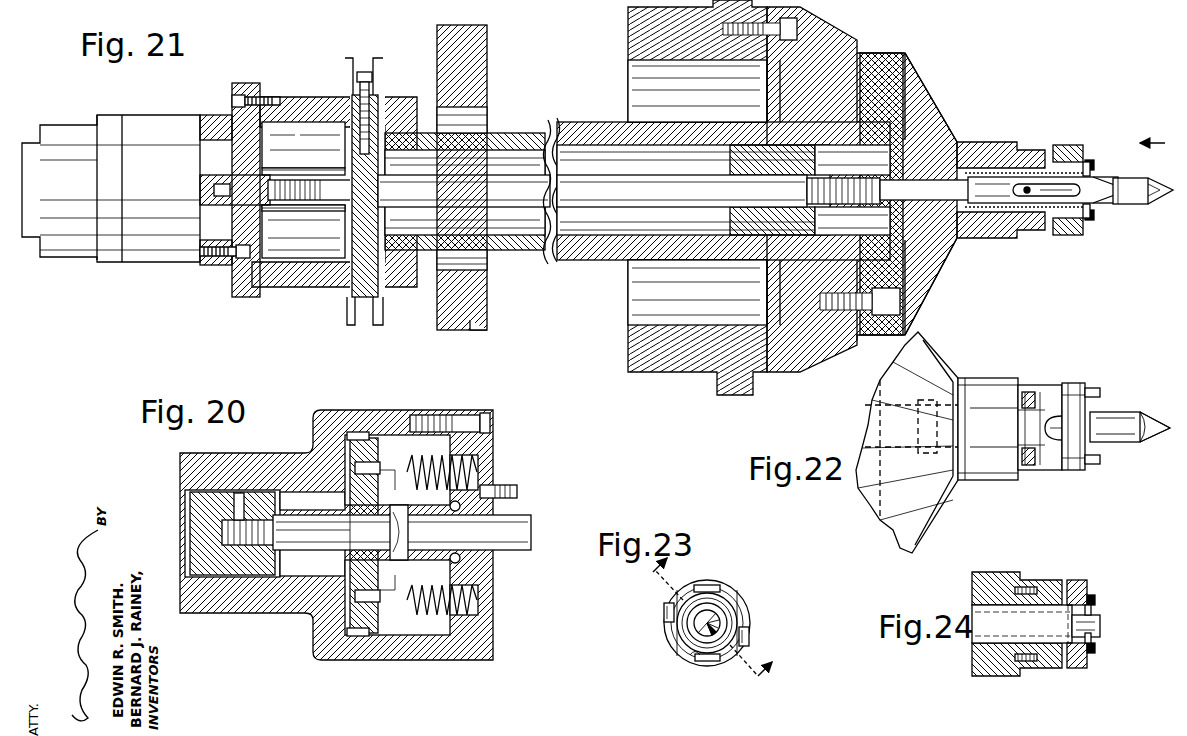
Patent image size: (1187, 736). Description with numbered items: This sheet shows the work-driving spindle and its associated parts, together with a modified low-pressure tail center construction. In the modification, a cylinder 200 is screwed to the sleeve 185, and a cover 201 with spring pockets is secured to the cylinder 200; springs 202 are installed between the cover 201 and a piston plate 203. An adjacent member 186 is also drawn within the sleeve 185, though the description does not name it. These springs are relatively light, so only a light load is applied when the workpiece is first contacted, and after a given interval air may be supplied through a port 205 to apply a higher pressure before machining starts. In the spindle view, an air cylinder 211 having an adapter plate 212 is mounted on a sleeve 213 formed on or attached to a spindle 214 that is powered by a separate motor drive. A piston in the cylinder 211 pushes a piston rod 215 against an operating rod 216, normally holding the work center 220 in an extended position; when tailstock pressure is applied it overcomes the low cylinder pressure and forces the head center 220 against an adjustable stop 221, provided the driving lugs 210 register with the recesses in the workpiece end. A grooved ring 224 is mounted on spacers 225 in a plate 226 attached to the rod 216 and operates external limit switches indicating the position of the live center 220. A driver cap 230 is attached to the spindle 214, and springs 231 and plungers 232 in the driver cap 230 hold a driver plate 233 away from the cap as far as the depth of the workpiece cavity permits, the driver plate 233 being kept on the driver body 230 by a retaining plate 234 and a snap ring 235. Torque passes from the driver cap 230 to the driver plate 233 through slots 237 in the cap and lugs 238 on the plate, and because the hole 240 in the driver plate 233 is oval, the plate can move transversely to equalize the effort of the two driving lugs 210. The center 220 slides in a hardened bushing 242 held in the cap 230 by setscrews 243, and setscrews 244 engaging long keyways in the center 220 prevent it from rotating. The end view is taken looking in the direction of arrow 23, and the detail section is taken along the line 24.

In FIG. 21, the arrow 23 is at (1152, 132).
In FIG. 23, the section line 24 is at (706, 626).
In FIG. 20, the sleeve 185 is at (214, 471).
In FIG. 20, the plug insert 186 is at (232, 533).
In FIG. 20, the cylinder 200 is at (302, 471).
In FIG. 20, the cover 201 is at (497, 566).
In FIG. 20, the springs 202 is at (417, 470).
In FIG. 20, the piston plate 203 is at (402, 532).
In FIG. 20, the port 205 is at (505, 486).
In FIG. 22, the driving lugs 210 is at (1098, 460).
In FIG. 23, the driving lugs 210 is at (664, 612).
In FIG. 24, the driving lugs 210 is at (1100, 622).
In FIG. 21, the air cylinder 211 is at (111, 188).
In FIG. 21, the adapter plate 212 is at (262, 222).
In FIG. 21, the sleeve 213 is at (300, 282).
In FIG. 21, the spindle 214 is at (870, 110).
In FIG. 21, the piston rod 215 is at (290, 190).
In FIG. 21, the operating rod 216 is at (469, 191).
In FIG. 21, the work center 220 is at (1160, 200).
In FIG. 22, the work center 220 is at (1122, 412).
In FIG. 23, the work center 220 is at (672, 638).
In FIG. 21, the adjustable stop 221 is at (940, 130).
In FIG. 22, the adjustable stop 221 is at (938, 442).
In FIG. 21, the grooved ring 224 is at (372, 60).
In FIG. 21, the spacers 225 is at (356, 108).
In FIG. 21, the plate 226 is at (350, 160).
In FIG. 21, the driver cap 230 is at (988, 142).
In FIG. 22, the driver cap 230 is at (985, 378).
In FIG. 24, the driver cap 230 is at (985, 572).
In FIG. 24, the springs 231 is at (1030, 580).
In FIG. 24, the plungers 232 is at (1058, 582).
In FIG. 21, the driver plate 233 is at (1070, 145).
In FIG. 22, the driver plate 233 is at (1078, 386).
In FIG. 23, the driver plate 233 is at (747, 611).
In FIG. 24, the driver plate 233 is at (1075, 668).
In FIG. 21, the retaining plate 234 is at (1094, 163).
In FIG. 23, the retaining plate 234 is at (742, 598).
In FIG. 24, the retaining plate 234 is at (1092, 650).
In FIG. 21, the snap ring 235 is at (1092, 170).
In FIG. 24, the snap ring 235 is at (1095, 648).
In FIG. 22, the slots 237 is at (1052, 436).
In FIG. 23, the slots 237 is at (690, 660).
In FIG. 22, the lugs 238 is at (1060, 440).
In FIG. 23, the lugs 238 is at (715, 663).
In FIG. 23, the hole 240 is at (735, 588).
In FIG. 21, the hardened bushing 242 is at (1098, 210).
In FIG. 22, the hardened bushing 242 is at (984, 460).
In FIG. 21, the setscrews 243 is at (1033, 196).
In FIG. 22, the setscrews 243 is at (1042, 385).
In FIG. 22, the setscrews 244 is at (1035, 468).